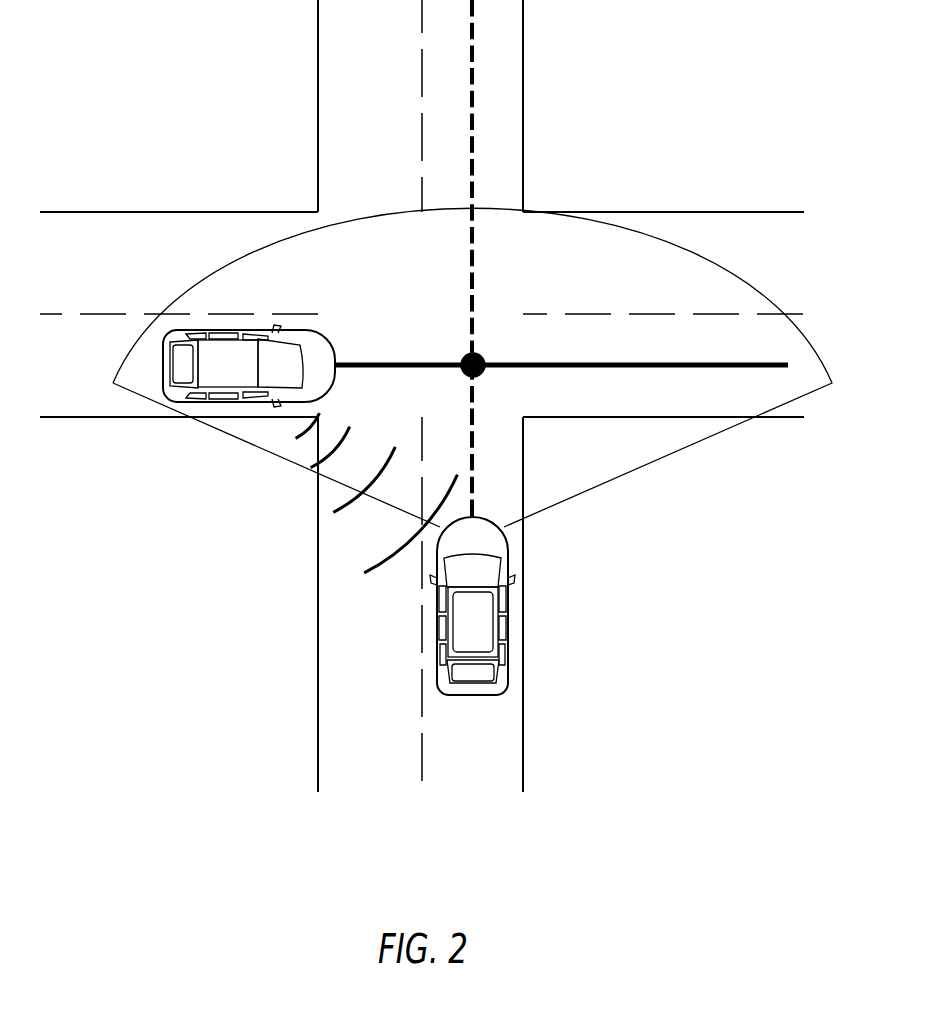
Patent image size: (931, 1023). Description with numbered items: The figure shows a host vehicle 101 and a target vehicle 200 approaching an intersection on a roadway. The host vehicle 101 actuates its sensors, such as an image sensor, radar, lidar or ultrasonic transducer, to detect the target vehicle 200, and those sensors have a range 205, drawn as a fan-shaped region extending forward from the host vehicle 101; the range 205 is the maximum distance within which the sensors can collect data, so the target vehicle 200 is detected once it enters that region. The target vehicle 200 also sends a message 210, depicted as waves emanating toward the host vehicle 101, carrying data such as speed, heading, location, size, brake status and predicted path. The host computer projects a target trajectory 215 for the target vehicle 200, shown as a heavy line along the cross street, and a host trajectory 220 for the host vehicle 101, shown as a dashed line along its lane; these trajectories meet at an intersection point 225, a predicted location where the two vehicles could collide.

The host vehicle 101 is at (507, 627).
The target vehicle 200 is at (270, 330).
The range 205 is at (348, 220).
The message 210 is at (385, 567).
The target trajectory 215 is at (426, 362).
The host trajectory 220 is at (472, 245).
The intersection point 225 is at (477, 353).